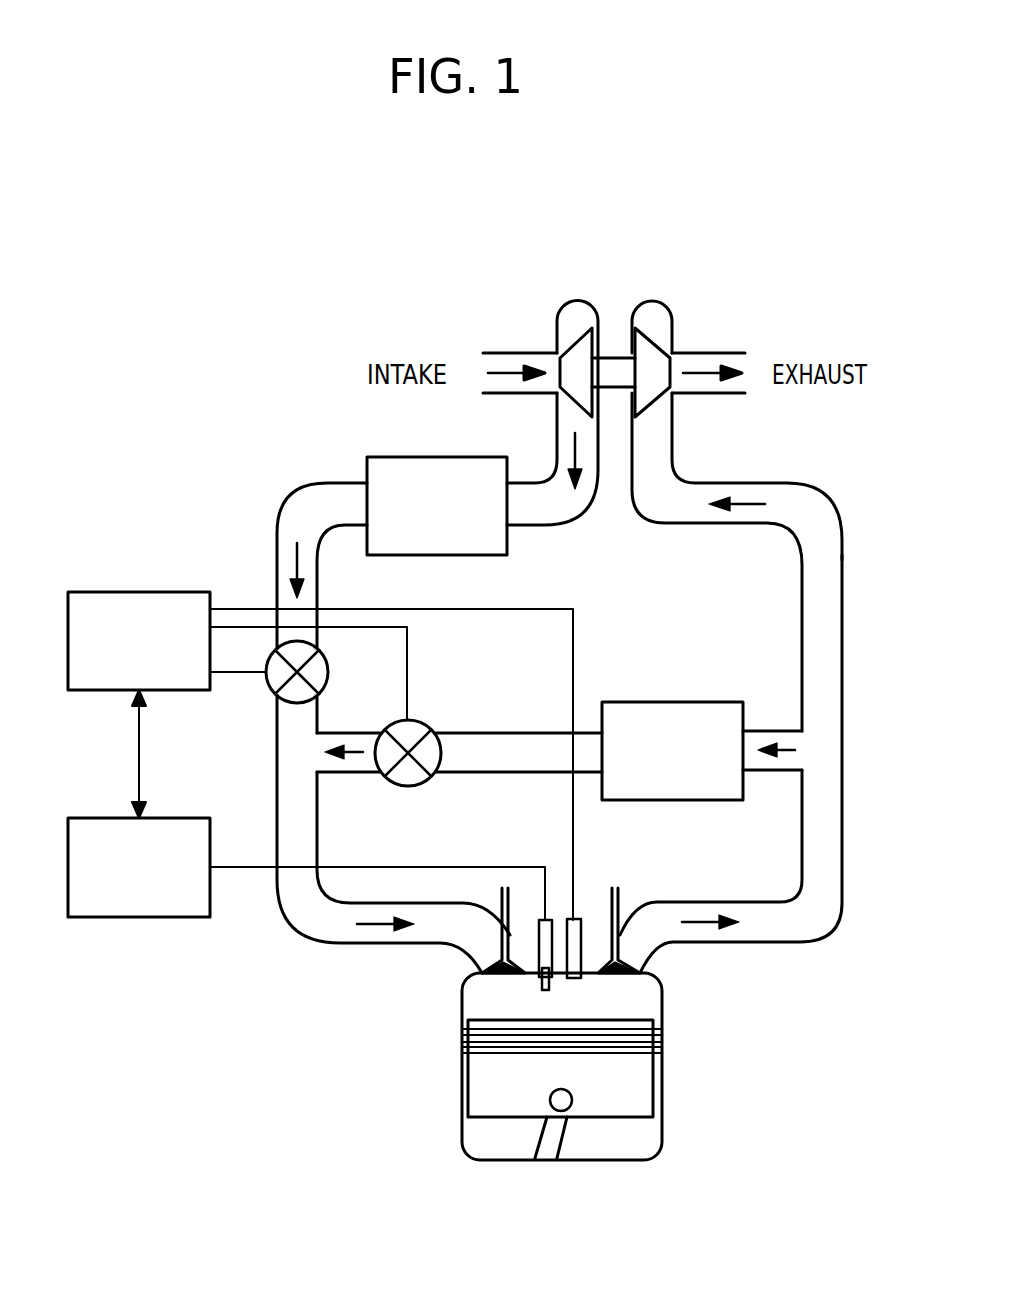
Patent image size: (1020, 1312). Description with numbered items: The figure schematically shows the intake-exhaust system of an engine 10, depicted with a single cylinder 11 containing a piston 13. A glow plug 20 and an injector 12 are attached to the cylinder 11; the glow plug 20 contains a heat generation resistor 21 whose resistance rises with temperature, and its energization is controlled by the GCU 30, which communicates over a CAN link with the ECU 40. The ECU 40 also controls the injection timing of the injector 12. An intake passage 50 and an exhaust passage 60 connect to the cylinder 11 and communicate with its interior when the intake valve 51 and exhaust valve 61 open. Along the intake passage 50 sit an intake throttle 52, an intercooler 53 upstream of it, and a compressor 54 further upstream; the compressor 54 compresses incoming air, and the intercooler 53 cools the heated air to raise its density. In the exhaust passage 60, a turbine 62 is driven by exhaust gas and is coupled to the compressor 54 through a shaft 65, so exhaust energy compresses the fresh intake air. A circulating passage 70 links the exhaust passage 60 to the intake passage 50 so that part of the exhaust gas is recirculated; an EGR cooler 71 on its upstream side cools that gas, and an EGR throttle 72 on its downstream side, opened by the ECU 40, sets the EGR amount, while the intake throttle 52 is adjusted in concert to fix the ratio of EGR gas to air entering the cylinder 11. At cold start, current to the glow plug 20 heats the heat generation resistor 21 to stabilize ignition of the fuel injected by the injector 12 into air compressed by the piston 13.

The engine 10 is at (613, 987).
The cylinder 11 is at (658, 1008).
The injector 12 is at (579, 938).
The piston 13 is at (625, 1087).
The glow plug 20 is at (550, 928).
The heat generation resistor 21 is at (542, 966).
The GCU 30 is at (175, 818).
The ECU 40 is at (175, 592).
The intake passage 50 is at (279, 906).
The intake valve 51 is at (478, 964).
The intake throttle 52 is at (270, 692).
The intercooler 53 is at (410, 457).
The compressor 54 is at (583, 358).
The exhaust passage 60 is at (840, 905).
The exhaust valve 61 is at (640, 966).
The turbine 62 is at (652, 358).
The shaft 65 is at (612, 372).
The circulating passage 70 is at (517, 733).
The EGR cooler 71 is at (683, 702).
The EGR throttle 72 is at (422, 722).